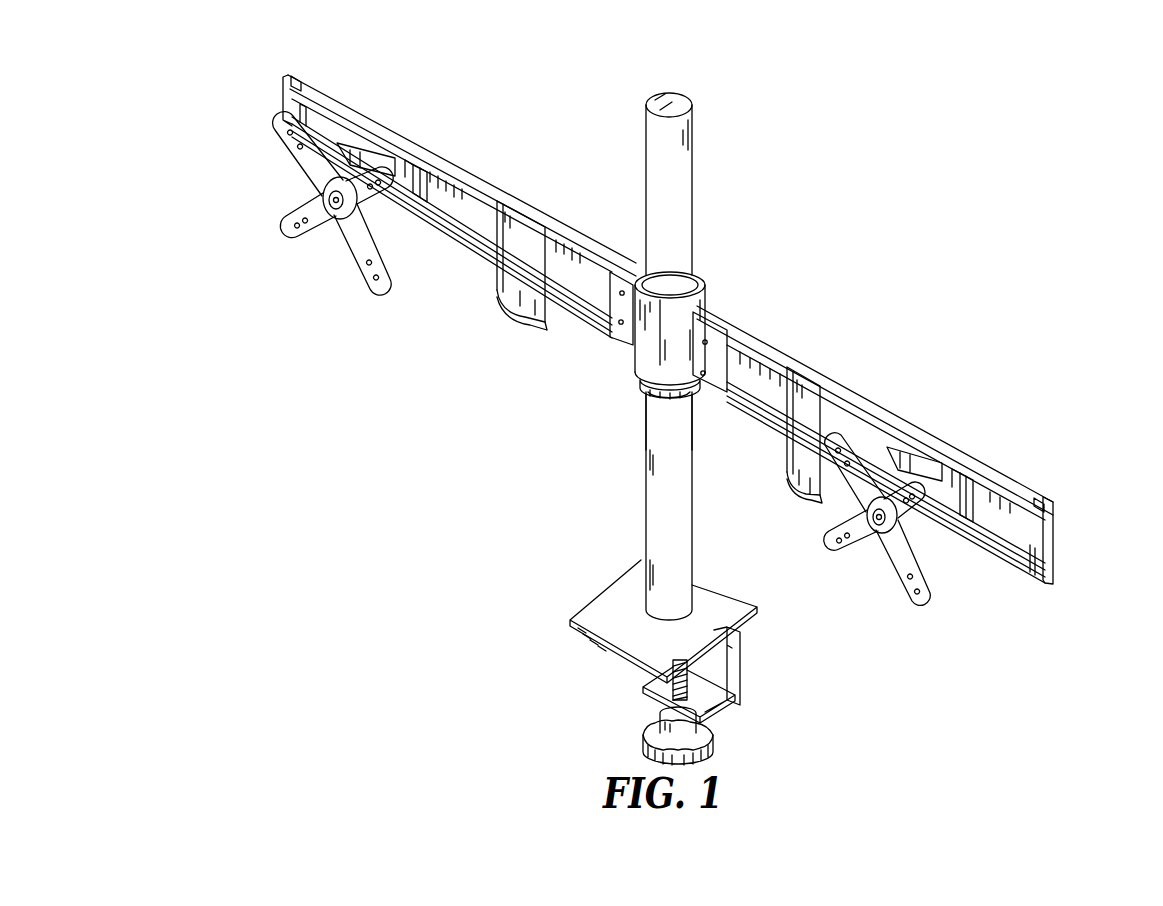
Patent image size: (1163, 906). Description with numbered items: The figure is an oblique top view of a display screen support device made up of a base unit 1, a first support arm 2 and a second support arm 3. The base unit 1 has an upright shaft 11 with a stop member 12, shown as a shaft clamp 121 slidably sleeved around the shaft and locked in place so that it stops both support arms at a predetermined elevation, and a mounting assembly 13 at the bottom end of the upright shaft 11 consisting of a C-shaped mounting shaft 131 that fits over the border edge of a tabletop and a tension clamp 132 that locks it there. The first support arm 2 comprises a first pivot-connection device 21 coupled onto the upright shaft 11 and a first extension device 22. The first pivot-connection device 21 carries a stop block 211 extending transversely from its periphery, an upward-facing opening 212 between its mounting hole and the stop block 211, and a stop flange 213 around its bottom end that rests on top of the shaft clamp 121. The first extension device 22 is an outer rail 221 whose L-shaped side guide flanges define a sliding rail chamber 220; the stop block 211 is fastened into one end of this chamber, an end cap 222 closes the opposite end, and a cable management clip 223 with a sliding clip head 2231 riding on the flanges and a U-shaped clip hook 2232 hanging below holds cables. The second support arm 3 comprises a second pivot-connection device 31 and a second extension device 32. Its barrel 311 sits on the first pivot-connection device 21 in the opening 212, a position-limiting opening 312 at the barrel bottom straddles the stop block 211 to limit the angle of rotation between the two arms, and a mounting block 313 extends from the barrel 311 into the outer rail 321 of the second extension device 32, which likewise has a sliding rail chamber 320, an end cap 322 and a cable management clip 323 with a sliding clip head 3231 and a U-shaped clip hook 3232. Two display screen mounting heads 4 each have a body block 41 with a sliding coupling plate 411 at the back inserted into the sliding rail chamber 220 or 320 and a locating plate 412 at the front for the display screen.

The base unit 1 is at (587, 582).
The upright shaft 11 is at (675, 538).
The stop member 12 is at (567, 462).
The shaft clamp 121 is at (672, 395).
The mounting assembly 13 is at (695, 692).
The C-shaped mounting shaft 131 is at (720, 660).
The tension clamp 132 is at (667, 697).
The first support arm 2 is at (453, 212).
The first pivot-connection device 21 is at (626, 243).
The stop block 211 is at (620, 303).
The opening 212 is at (657, 285).
The stop flange 213 is at (643, 382).
The first extension device 22 is at (442, 153).
The sliding rail chamber 220 is at (322, 122).
The outer rail 221 is at (467, 213).
The end cap 222 is at (282, 95).
The cable management clip 223 is at (477, 279).
The sliding clip head 2231 is at (510, 240).
The U-shaped clip hook 2232 is at (533, 320).
The second support arm 3 is at (835, 375).
The second pivot-connection device 31 is at (664, 279).
The barrel 311 is at (700, 330).
The position-limiting opening 312 is at (620, 337).
The mounting block 313 is at (663, 347).
The second extension device 32 is at (983, 473).
The sliding rail chamber 320 is at (1012, 538).
The outer rail 321 is at (1007, 523).
The end cap 322 is at (1053, 530).
The cable management clip 323 is at (764, 454).
The sliding clip head 3231 is at (797, 402).
The U-shaped clip hook 3232 is at (806, 490).
The display screen mounting head 4 is at (578, 356).
The body block 41 is at (337, 143).
The sliding coupling plate 411 is at (412, 167).
The locating plate 412 is at (298, 214).